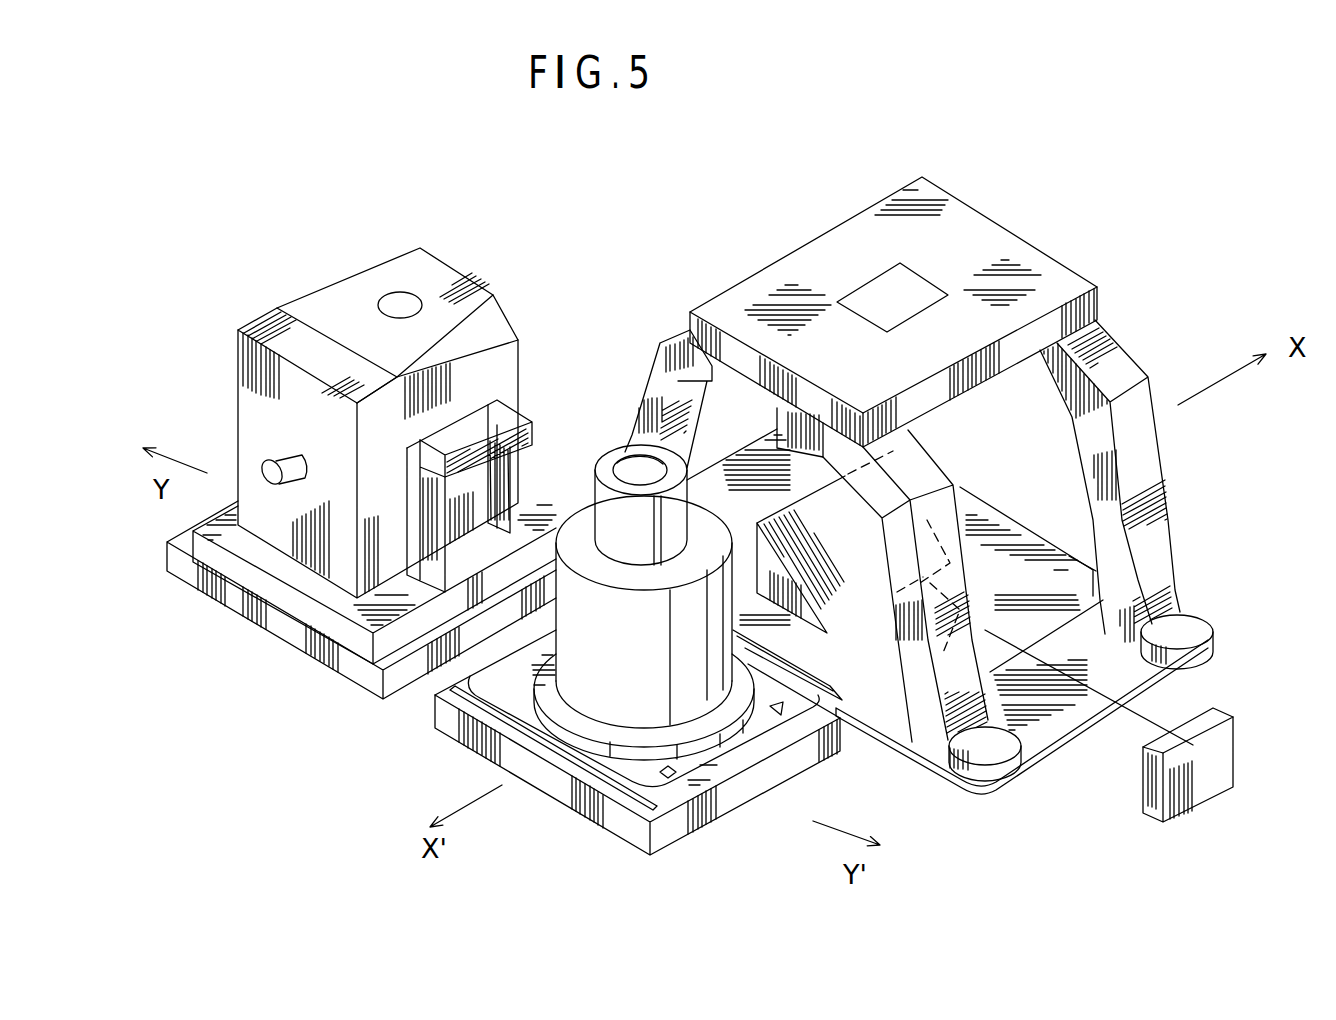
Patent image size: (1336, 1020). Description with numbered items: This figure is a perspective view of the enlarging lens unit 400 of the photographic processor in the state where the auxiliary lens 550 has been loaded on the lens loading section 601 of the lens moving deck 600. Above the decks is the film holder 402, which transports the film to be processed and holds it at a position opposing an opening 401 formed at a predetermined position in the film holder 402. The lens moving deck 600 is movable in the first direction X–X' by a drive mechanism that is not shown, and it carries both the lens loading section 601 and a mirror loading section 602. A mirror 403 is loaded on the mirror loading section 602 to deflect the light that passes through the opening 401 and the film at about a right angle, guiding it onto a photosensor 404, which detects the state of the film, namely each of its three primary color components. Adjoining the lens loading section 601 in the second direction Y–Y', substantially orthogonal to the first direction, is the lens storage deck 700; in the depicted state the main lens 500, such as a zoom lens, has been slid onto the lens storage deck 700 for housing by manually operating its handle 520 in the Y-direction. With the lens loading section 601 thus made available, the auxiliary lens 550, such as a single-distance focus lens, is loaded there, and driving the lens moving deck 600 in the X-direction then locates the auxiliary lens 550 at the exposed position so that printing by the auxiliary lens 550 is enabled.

The enlarging lens unit 400 is at (919, 465).
The opening 401 is at (888, 293).
The film holder 402 is at (962, 222).
The mirror 403 is at (838, 595).
The photosensor 404 is at (1238, 743).
The main lens 500 is at (467, 413).
The handle 520 is at (537, 432).
The auxiliary lens 550 is at (592, 692).
The lens moving deck 600 is at (677, 826).
The lens loading section 601 is at (740, 758).
The mirror loading section 602 is at (1028, 558).
The lens storage deck 700 is at (291, 640).